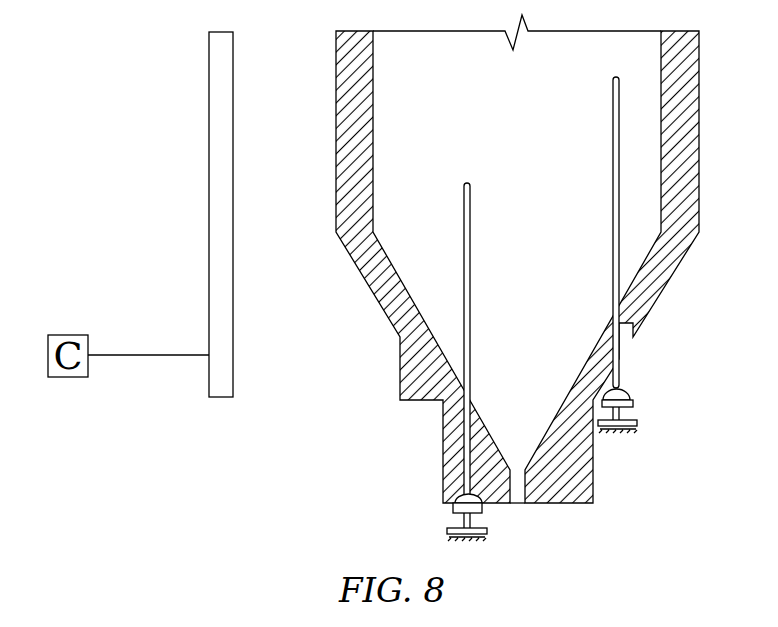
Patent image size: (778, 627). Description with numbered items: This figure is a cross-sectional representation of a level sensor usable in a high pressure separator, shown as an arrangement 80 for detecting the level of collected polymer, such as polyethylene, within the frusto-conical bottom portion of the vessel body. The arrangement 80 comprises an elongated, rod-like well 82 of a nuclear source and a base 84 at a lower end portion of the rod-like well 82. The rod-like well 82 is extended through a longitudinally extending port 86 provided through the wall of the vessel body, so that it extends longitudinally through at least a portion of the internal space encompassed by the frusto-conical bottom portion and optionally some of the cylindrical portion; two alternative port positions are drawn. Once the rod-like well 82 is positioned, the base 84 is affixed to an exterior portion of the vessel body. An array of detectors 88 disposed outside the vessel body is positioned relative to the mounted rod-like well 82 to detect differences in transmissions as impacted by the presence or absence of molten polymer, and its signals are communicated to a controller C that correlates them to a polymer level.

The arrangement 80 is at (702, 31).
The rod-like well 82 is at (620, 205).
The base 84 is at (635, 402).
The longitudinally extending port 86 is at (473, 395).
The array of detectors 88 is at (228, 255).